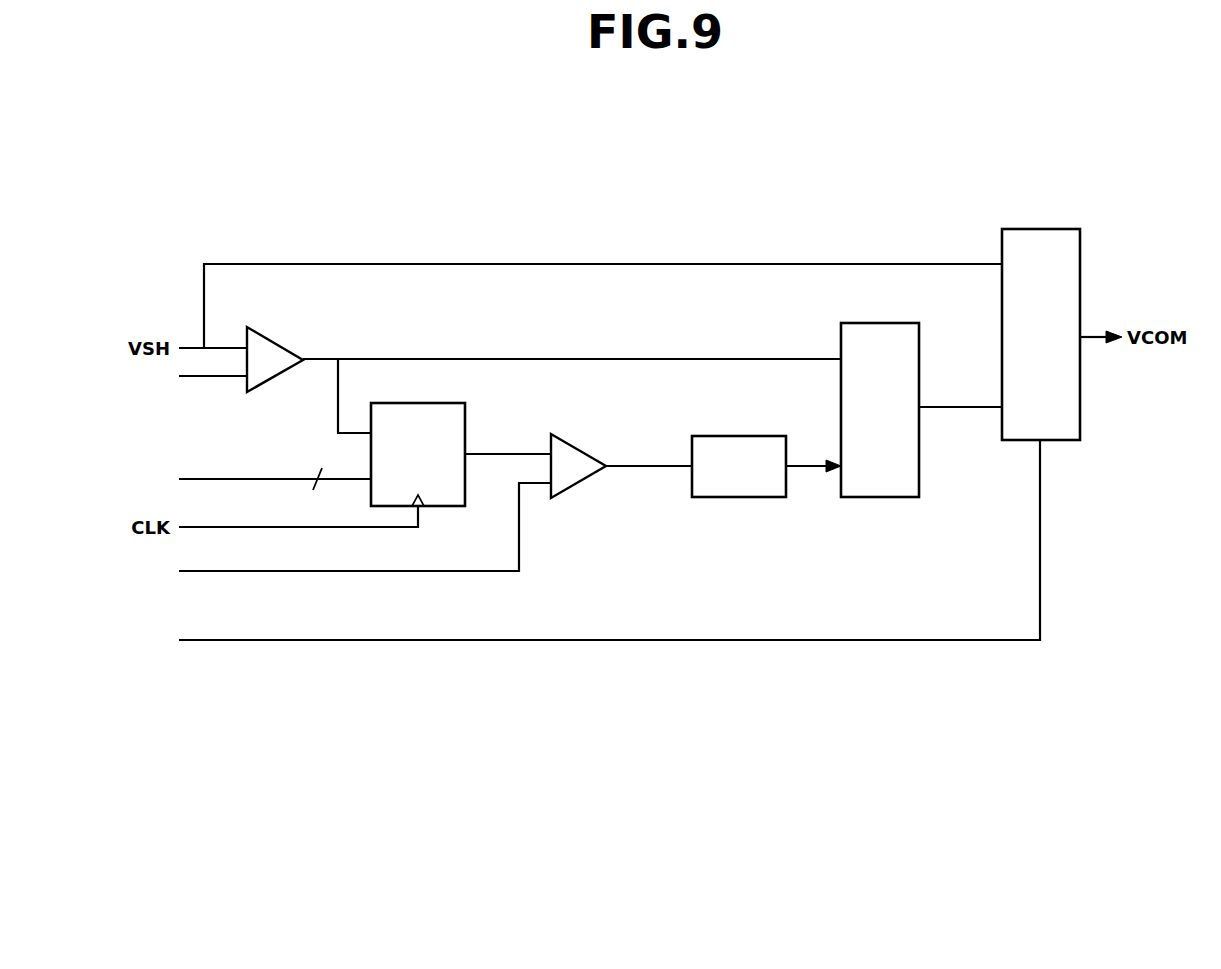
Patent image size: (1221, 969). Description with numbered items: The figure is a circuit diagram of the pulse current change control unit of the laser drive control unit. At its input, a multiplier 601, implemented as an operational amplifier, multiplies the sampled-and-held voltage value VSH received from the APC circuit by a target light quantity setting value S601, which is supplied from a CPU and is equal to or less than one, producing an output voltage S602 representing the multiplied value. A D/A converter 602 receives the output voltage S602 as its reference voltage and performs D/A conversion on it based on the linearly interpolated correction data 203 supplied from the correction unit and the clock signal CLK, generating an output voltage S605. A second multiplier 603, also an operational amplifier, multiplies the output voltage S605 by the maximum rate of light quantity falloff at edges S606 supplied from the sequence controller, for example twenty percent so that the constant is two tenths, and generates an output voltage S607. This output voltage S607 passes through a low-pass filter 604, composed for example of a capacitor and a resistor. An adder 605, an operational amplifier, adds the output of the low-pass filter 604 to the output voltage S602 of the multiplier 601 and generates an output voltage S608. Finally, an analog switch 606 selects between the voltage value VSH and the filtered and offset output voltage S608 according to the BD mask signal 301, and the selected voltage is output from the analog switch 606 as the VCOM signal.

The multiplier 601 is at (279, 343).
The D/A converter 602 is at (436, 508).
The multiplier 603 is at (583, 439).
The low-pass filter 604 is at (737, 434).
The adder 605 is at (878, 321).
The analog switch 606 is at (1040, 227).
The target light quantity setting value S601 is at (183, 376).
The output voltage S602 is at (378, 358).
The output voltage S605 is at (509, 452).
The maximum rate of light quantity falloff at edges S606 is at (335, 532).
The output voltage S607 is at (647, 464).
The output voltage S608 is at (962, 405).
The linearly interpolated correction data 203 is at (251, 479).
The BD mask signal 301 is at (586, 545).